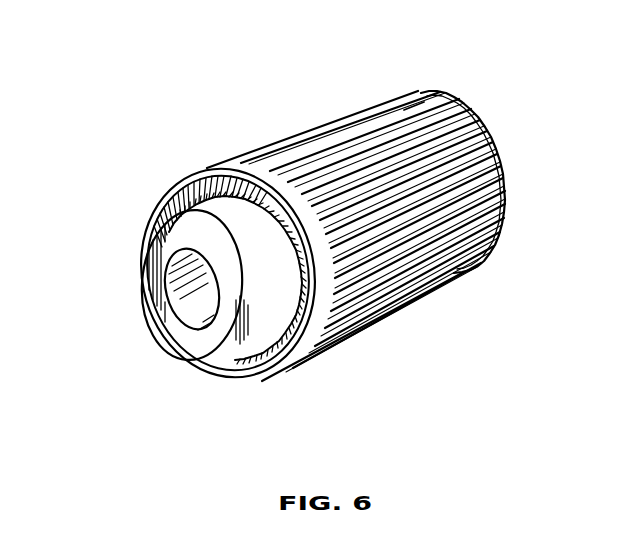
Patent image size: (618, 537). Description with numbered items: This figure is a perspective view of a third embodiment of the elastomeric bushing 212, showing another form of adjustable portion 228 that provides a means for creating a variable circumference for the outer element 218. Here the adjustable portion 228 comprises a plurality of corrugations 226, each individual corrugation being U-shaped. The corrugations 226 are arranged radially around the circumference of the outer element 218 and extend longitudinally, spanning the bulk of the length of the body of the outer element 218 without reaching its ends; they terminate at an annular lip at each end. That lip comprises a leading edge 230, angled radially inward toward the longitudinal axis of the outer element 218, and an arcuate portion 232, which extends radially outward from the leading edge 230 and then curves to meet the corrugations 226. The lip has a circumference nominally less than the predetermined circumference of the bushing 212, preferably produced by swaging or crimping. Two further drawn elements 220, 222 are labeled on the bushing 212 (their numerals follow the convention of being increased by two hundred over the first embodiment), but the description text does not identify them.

The bushing 212 is at (298, 237).
The outer element 218 is at (291, 127).
The central bore 220 is at (166, 311).
The serrated ring 222 is at (232, 367).
The corrugations 226 is at (457, 197).
The adjustable portion 228 is at (412, 112).
The leading edge 230 is at (190, 176).
The arcuate portion 232 is at (207, 167).